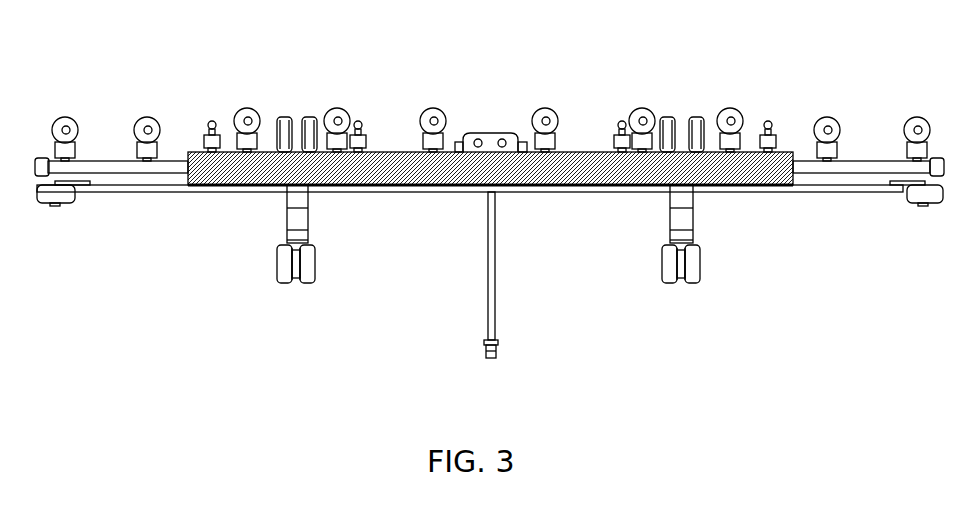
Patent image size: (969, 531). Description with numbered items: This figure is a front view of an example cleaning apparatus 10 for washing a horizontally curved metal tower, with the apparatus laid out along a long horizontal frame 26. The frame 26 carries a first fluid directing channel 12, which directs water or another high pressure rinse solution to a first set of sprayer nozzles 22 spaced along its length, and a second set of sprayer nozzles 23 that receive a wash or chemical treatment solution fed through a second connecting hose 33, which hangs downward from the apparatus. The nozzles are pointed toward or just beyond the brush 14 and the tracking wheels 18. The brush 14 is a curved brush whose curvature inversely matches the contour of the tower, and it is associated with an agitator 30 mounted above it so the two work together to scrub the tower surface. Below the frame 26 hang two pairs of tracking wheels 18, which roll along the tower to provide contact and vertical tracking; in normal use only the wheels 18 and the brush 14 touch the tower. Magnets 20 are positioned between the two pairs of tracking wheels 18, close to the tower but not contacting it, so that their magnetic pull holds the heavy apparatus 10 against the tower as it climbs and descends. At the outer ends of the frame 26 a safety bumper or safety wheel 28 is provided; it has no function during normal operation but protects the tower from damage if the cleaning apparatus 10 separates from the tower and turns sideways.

The cleaning apparatus 10 is at (700, 66).
The first fluid directing channel 12 is at (150, 165).
The brush 14 is at (425, 165).
The tracking wheels 18 is at (665, 267).
The magnets 20 is at (301, 221).
The first set of sprayer nozzles 22 is at (560, 115).
The second set of sprayer nozzles 23 is at (368, 112).
The frame 26 is at (143, 190).
The safety bumper or safety wheel 28 is at (922, 205).
The agitator 30 is at (488, 130).
The second connecting hose 33 is at (490, 290).